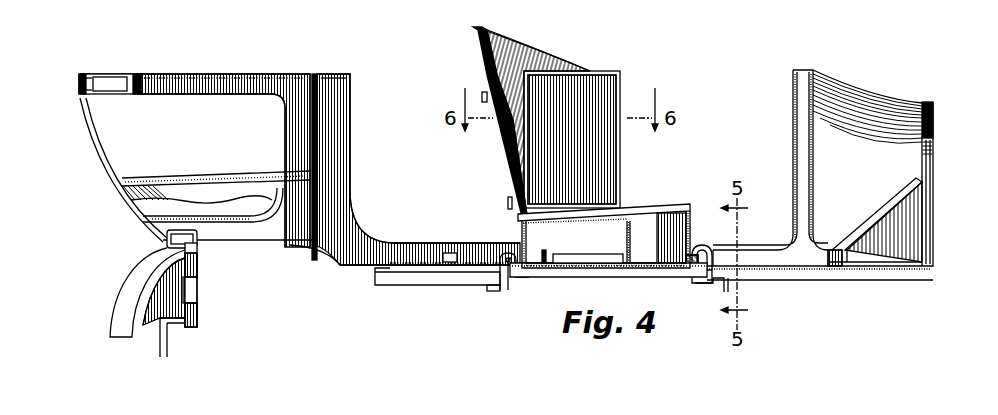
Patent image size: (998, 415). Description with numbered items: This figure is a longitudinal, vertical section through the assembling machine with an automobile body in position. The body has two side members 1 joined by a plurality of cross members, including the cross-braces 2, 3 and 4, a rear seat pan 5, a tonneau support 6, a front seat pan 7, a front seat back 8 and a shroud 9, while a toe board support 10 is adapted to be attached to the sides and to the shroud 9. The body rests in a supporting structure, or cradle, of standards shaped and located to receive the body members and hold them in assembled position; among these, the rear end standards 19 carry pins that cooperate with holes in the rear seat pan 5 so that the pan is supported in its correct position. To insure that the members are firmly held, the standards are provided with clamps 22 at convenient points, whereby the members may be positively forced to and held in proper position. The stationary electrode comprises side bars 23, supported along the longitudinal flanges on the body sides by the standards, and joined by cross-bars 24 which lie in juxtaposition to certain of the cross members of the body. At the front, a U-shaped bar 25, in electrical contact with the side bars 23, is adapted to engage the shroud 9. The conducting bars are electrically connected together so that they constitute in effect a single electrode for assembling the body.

The side members 1 is at (297, 93).
The cross-brace 2 is at (634, 263).
The cross-brace 3 is at (577, 262).
The cross-brace 4 is at (447, 253).
The rear seat pan 5 is at (306, 222).
The tonneau support 6 is at (79, 83).
The front seat pan 7 is at (629, 214).
The front seat back 8 is at (536, 55).
The shroud 9 is at (870, 98).
The toe board support 10 is at (877, 216).
The rear end standards 19 is at (127, 298).
The clamps 22 is at (198, 266).
The side bars 23 is at (660, 278).
The cross-bars 24 is at (519, 278).
The U-shaped bar 25 is at (934, 118).